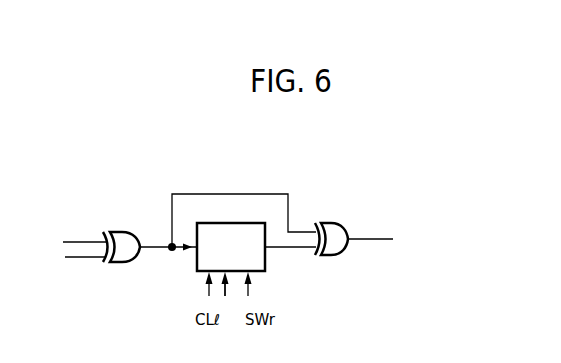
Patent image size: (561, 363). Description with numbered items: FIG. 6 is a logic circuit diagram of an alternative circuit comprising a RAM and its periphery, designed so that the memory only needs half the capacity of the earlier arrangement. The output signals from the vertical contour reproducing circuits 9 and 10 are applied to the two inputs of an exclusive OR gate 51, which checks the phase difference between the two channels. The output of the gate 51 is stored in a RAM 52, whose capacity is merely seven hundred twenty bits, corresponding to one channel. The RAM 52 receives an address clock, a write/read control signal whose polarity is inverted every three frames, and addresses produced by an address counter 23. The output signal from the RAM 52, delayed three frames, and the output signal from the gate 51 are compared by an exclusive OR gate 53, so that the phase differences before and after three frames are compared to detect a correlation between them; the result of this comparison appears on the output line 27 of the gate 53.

The vertical contour reproducing circuit 9 is at (78, 240).
The vertical contour reproducing circuit 10 is at (75, 261).
The exclusive OR gate 51 is at (116, 263).
The RAM 52 is at (244, 223).
The exclusive OR gate 53 is at (340, 224).
The output signal line 27 is at (382, 239).
The address counter 23 is at (228, 283).